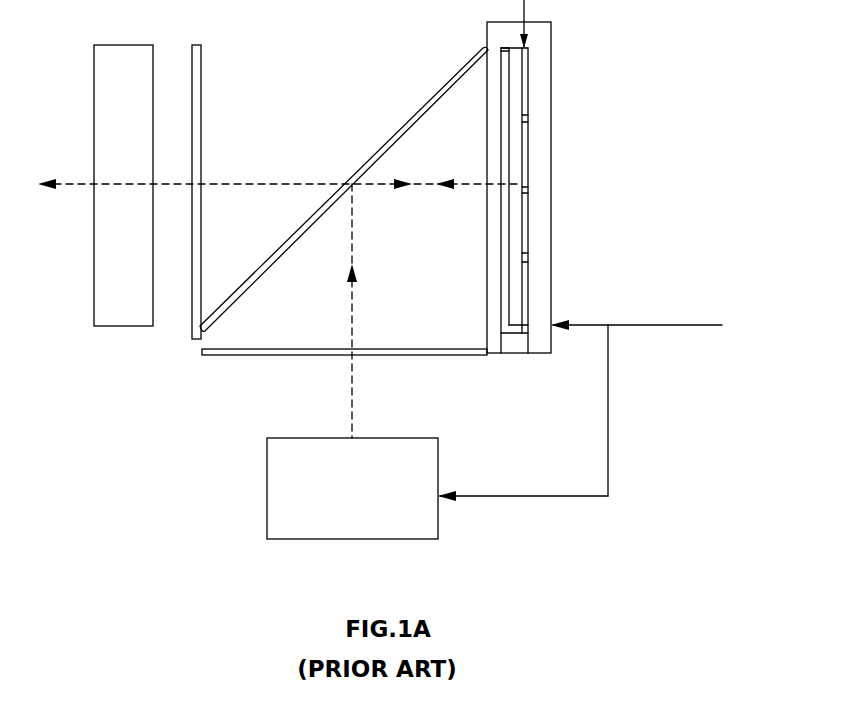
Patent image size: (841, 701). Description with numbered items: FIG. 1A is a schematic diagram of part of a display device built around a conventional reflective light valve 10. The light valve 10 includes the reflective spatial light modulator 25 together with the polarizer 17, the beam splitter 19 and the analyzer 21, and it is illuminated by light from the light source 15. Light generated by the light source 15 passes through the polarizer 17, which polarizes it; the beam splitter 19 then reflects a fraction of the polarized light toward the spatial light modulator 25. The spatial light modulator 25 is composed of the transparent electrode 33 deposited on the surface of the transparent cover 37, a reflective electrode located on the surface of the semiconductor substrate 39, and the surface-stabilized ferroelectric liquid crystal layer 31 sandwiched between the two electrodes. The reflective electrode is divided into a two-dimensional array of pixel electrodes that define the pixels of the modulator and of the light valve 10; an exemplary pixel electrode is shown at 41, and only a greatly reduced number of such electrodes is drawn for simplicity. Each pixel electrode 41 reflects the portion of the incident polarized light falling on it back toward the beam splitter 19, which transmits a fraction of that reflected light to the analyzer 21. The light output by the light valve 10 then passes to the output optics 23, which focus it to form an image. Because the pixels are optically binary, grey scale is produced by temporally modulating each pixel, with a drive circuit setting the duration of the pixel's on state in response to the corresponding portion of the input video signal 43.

The reflective light valve 10 is at (384, 272).
The light source 15 is at (267, 497).
The polarizer 17 is at (243, 357).
The beam splitter 19 is at (437, 90).
The analyzer 21 is at (201, 92).
The output optics 23 is at (94, 300).
The reflective spatial light modulator 25 is at (555, 68).
The surface-stabilized ferroelectric liquid crystal layer 31 is at (516, 337).
The transparent electrode 33 is at (497, 316).
The transparent cover 37 is at (493, 270).
The semiconductor substrate 39 is at (543, 238).
The pixel electrode 41 is at (525, 165).
The input video signal 43 is at (614, 322).